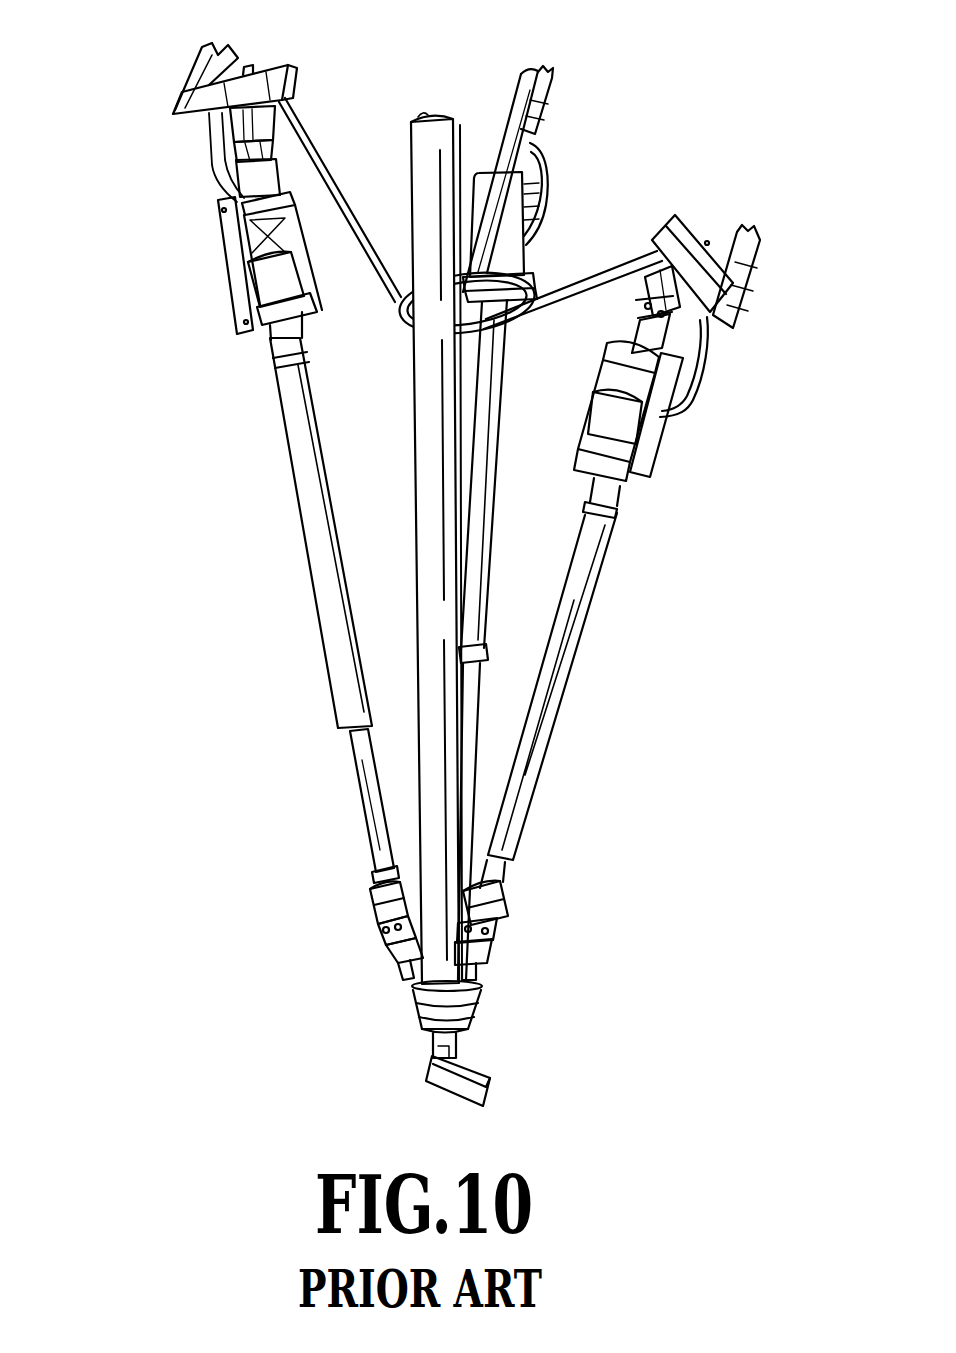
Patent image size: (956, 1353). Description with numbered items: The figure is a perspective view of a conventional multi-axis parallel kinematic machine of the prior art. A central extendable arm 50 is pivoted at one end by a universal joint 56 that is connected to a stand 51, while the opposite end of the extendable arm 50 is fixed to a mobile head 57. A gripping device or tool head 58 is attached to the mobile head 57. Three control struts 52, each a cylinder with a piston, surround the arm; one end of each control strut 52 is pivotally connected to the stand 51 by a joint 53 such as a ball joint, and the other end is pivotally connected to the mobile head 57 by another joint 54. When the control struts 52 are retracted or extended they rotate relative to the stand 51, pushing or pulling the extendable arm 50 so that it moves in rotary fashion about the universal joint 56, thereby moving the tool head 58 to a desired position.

The extendable arm 50 is at (428, 453).
The stand 51 is at (287, 63).
The control strut 52 is at (294, 546).
The joint 53 is at (247, 178).
The joint 54 is at (402, 946).
The universal joint 56 is at (384, 227).
The mobile head 57 is at (472, 1005).
The tool head 58 is at (463, 1051).